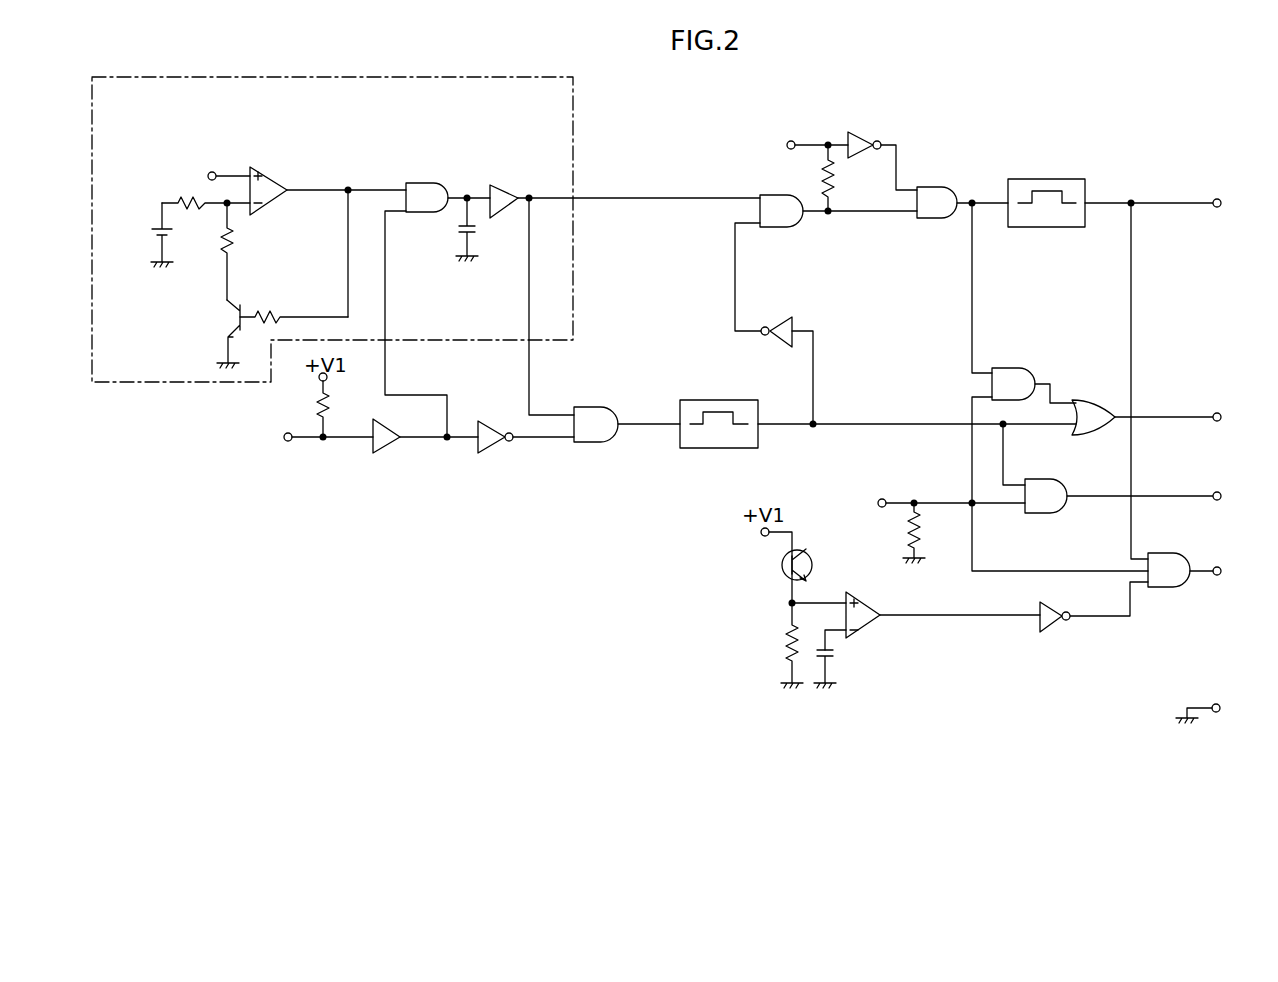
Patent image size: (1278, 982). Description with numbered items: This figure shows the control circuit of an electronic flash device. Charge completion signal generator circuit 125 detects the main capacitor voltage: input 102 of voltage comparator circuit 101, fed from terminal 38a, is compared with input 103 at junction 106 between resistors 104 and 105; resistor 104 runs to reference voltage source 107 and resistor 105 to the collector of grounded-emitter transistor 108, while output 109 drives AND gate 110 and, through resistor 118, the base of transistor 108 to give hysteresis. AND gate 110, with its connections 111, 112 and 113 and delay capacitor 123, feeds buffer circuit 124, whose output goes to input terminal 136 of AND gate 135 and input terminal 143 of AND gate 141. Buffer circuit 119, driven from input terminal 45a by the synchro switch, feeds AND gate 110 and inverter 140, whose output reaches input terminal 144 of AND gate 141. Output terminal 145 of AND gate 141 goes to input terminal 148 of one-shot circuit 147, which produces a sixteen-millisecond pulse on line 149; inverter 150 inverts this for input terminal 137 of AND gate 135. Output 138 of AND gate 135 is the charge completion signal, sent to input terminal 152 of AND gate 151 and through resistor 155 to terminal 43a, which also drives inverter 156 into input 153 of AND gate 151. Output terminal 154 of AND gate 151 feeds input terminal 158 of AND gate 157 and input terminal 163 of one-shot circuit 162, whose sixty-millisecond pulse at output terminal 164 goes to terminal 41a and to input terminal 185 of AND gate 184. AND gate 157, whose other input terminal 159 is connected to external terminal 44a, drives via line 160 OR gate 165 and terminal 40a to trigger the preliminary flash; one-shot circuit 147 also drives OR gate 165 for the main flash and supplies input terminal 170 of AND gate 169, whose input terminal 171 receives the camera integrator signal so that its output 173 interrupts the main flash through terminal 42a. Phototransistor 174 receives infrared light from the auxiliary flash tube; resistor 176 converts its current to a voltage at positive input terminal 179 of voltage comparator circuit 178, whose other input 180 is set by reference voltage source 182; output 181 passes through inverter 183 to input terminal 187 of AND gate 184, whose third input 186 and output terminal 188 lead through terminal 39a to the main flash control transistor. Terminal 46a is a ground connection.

The charge completion signal generator circuit 125 is at (503, 77).
The input terminal 38a is at (210, 172).
The voltage comparator circuit 101 is at (276, 187).
The input 102 is at (232, 176).
The input 103 is at (246, 207).
The resistor 104 is at (184, 200).
The resistor 105 is at (225, 240).
The junction 106 is at (224, 207).
The reference voltage source 107 is at (151, 232).
The transistor 108 is at (232, 318).
The resistor 118 is at (268, 312).
The output 109 is at (316, 190).
The AND gate 110 is at (428, 183).
The AND gate input 111 is at (380, 190).
The AND gate second input line 112 is at (395, 212).
The AND gate output line 113 is at (459, 198).
The delay capacitor 123 is at (472, 229).
The buffer circuit 124 is at (505, 190).
The AND gate 135 is at (788, 228).
The input terminal 136 is at (740, 170).
The input terminal 137 is at (745, 224).
The AND gate output line 138 is at (813, 213).
The terminal 43a is at (791, 141).
The resistor 155 is at (836, 179).
The inverter 156 is at (860, 132).
The input 153 is at (898, 186).
The input terminal 152 is at (881, 213).
The AND gate 151 is at (931, 219).
The output terminal 154 is at (970, 200).
The one-shot circuit 162 is at (1046, 179).
The input terminal 163 is at (995, 206).
The output terminal 164 is at (1114, 201).
The terminal 41a is at (1221, 200).
The inverter 150 is at (796, 323).
The input terminal 158 is at (984, 366).
The AND gate 157 is at (1022, 367).
The input terminal 159 is at (972, 397).
The AND gate output line 160 is at (1048, 388).
The OR gate 165 is at (1090, 400).
The terminal 40a is at (1217, 413).
The one-shot output line 149 is at (786, 426).
The input terminal 170 is at (1005, 484).
The AND gate 169 is at (1060, 481).
The input terminal 171 is at (1000, 505).
The AND gate output line 173 is at (1081, 498).
The terminal 42a is at (1216, 492).
The external terminal 44a is at (883, 499).
The input terminal 185 is at (1138, 557).
The AND gate input line 186 is at (1100, 573).
The AND gate 184 is at (1166, 587).
The input terminal 187 is at (1133, 600).
The output terminal 188 is at (1201, 574).
The terminal 39a is at (1218, 567).
The inverter 183 is at (1052, 631).
The ground terminal 46a is at (1218, 704).
The phototransistor 174 is at (800, 550).
The positive input terminal 179 is at (829, 600).
The resistor 176 is at (788, 641).
The voltage comparator circuit 178 is at (873, 601).
The comparator inverting input line 180 is at (850, 633).
The reference voltage source 182 is at (838, 659).
The comparator output line 181 is at (920, 618).
The input terminal 45a is at (283, 441).
The buffer circuit 119 is at (380, 454).
The inverter 140 is at (483, 453).
The input terminal 144 is at (549, 439).
The input terminal 143 is at (556, 414).
The AND gate 141 is at (601, 406).
The output terminal 145 is at (636, 426).
The input terminal 148 is at (672, 426).
The one-shot circuit 147 is at (715, 400).